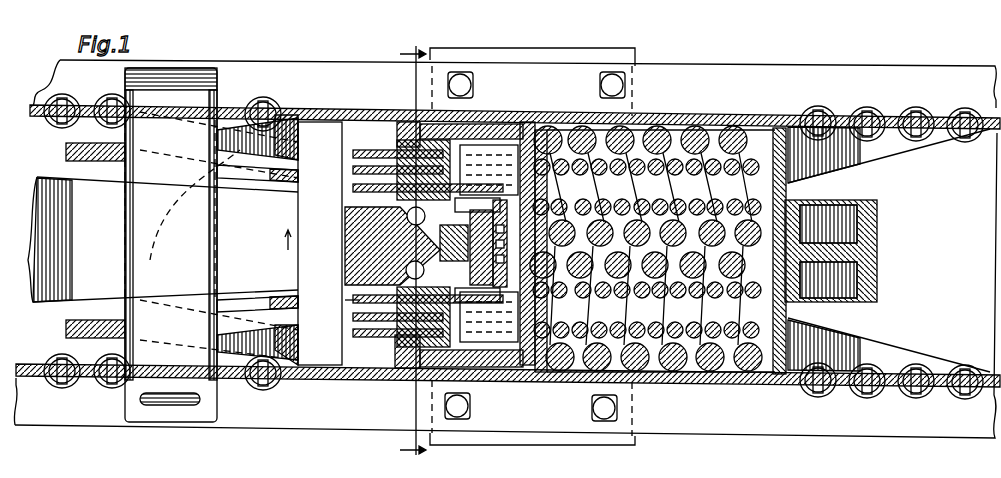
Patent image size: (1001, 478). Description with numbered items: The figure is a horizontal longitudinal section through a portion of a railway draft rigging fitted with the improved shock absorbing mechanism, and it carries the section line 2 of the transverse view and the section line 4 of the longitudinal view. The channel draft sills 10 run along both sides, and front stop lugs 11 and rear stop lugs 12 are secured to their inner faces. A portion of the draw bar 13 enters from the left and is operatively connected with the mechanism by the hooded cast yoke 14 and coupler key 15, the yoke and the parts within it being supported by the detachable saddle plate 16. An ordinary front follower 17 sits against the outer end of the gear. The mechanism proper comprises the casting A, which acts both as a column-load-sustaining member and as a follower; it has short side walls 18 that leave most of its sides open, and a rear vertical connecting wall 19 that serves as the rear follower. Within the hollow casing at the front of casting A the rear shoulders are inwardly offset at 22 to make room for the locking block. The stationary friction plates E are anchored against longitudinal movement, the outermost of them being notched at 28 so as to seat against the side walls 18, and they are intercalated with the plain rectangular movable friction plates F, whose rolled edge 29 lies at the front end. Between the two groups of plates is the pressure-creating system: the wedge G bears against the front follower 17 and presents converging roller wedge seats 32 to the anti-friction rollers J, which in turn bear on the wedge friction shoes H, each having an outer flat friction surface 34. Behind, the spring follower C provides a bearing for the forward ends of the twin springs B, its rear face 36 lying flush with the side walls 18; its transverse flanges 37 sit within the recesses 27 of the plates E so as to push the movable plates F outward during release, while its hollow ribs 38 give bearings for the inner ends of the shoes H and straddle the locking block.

The section line 2— 2 is at (413, 251).
The section line 4— 4 is at (281, 240).
The channel draft sills 10 is at (975, 132).
The front stop lugs 11 is at (296, 116).
The rear stop lugs 12 is at (856, 165).
The draw bar 13 is at (163, 236).
The hooded cast yoke 14 is at (68, 330).
The coupler key 15 is at (207, 76).
The detachable saddle plate 16 is at (618, 444).
The front follower 17 is at (320, 243).
The side walls 18 is at (470, 126).
The rear vertical connecting wall 19 is at (785, 195).
The inwardly offset portions of rear shoulders 22 is at (525, 410).
The recesses of stationary plates 27 is at (440, 368).
The notch 28 is at (412, 124).
The front rolled edge of movable plate 29 is at (360, 156).
The roller wedge seats 32 is at (392, 238).
The flat surface of shoe 34 is at (348, 312).
The rear face of spring follower 36 is at (550, 124).
The transversely extending flanges 37 is at (520, 126).
The hollow shoulders or ribs 38 is at (472, 250).
The casting A is at (537, 97).
The twin springs B is at (704, 128).
The spring follower C is at (522, 366).
The stationary friction plates E is at (416, 366).
The movable friction plates F is at (490, 150).
The wedge G is at (345, 276).
The wedge friction shoes H is at (380, 290).
The anti-friction rollers J is at (415, 243).